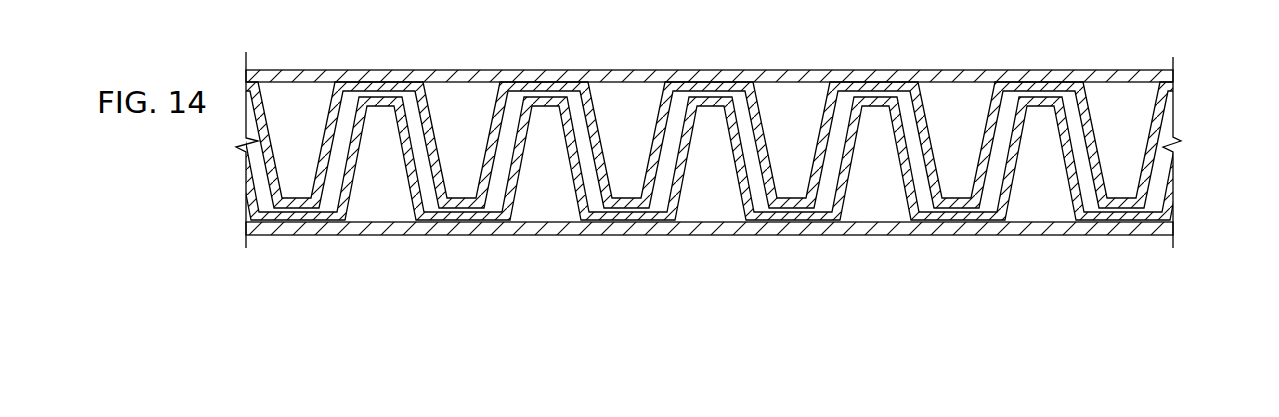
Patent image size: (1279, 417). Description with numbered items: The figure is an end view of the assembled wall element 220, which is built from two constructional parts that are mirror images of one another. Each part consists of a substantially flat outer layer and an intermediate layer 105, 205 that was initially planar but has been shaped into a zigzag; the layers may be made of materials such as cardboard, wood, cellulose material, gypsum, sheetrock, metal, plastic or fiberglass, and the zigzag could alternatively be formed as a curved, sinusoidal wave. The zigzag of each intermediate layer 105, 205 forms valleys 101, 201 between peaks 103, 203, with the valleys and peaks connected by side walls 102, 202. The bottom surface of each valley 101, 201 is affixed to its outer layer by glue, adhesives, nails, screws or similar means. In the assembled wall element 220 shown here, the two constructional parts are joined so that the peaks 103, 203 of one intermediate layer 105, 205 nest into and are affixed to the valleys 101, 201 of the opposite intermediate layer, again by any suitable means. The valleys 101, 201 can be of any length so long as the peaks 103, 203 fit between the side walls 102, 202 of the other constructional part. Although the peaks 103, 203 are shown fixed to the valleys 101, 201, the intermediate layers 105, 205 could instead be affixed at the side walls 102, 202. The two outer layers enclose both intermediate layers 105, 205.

The valley 101 is at (514, 104).
The side wall 102 is at (1143, 140).
The peak 103 is at (630, 195).
The intermediate layer 105 is at (268, 106).
The valley 201 is at (987, 197).
The side wall 202 is at (578, 148).
The peak 203 is at (876, 105).
The intermediate layer 205 is at (428, 141).
The wall element 220 is at (1220, 81).